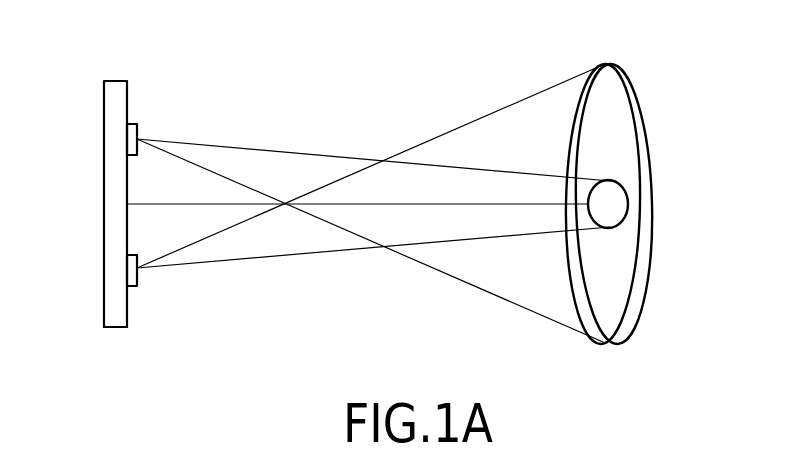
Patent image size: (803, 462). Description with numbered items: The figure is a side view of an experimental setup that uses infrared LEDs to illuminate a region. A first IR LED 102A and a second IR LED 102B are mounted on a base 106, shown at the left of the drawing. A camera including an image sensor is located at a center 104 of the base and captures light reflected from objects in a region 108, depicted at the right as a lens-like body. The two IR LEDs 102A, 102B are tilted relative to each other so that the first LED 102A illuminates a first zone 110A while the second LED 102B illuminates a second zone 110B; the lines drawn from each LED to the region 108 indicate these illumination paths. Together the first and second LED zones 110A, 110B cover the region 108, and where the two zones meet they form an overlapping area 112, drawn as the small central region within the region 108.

The first IR LED 102A is at (133, 127).
The second IR LED 102B is at (135, 280).
The center 104 is at (127, 212).
The base 106 is at (118, 322).
The region 108 is at (642, 160).
The first zone 110A is at (613, 284).
The second zone 110B is at (627, 86).
The overlapping area 112 is at (610, 200).